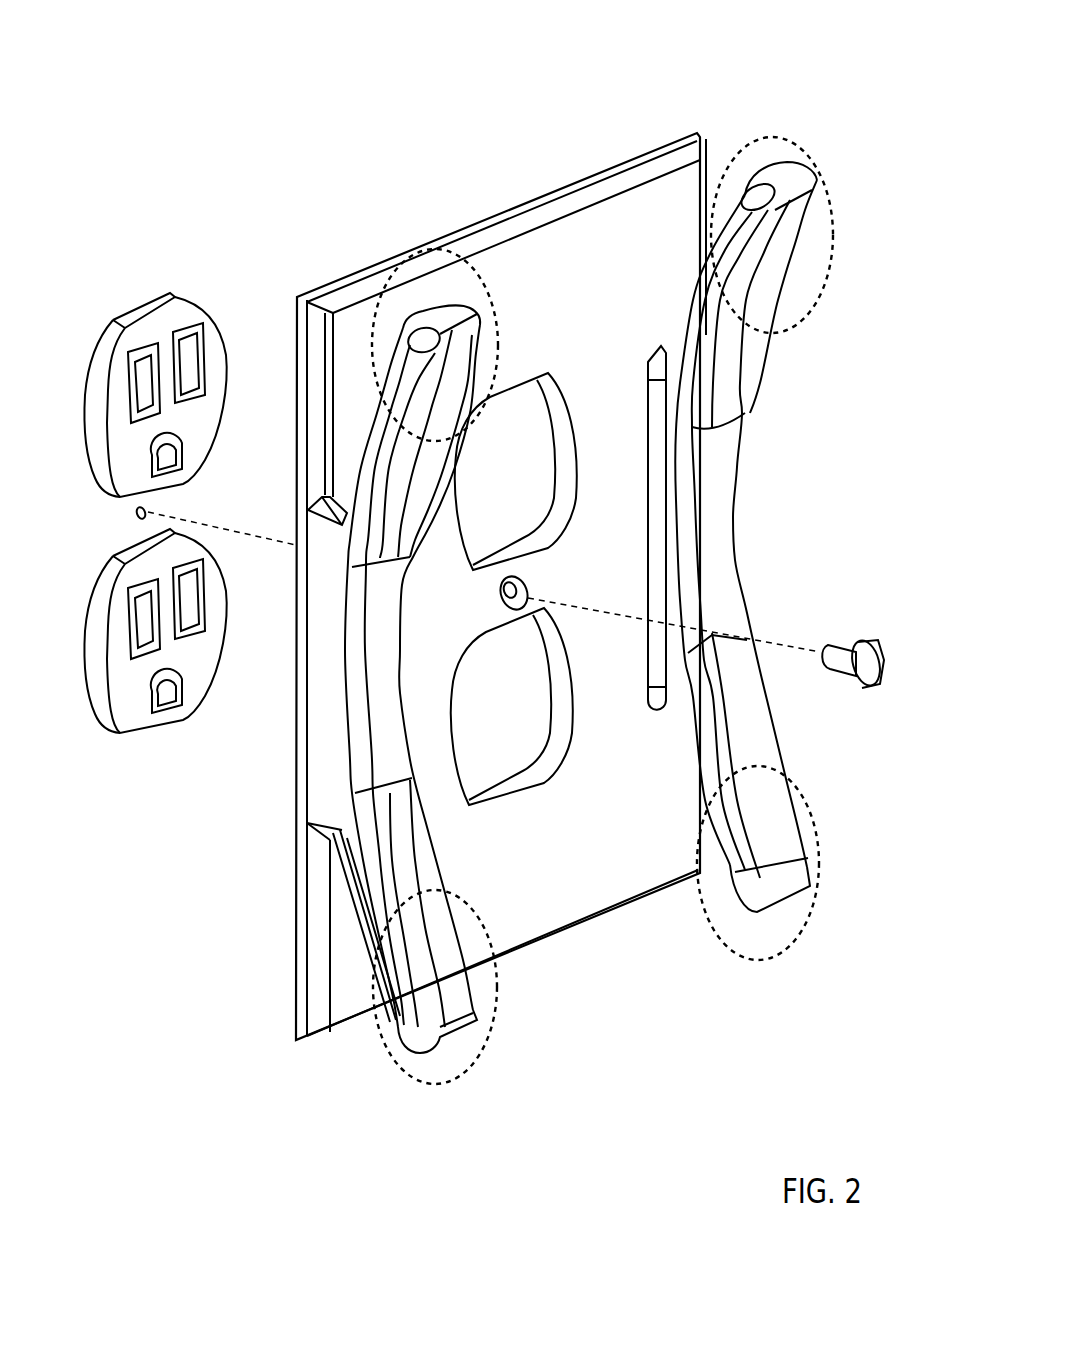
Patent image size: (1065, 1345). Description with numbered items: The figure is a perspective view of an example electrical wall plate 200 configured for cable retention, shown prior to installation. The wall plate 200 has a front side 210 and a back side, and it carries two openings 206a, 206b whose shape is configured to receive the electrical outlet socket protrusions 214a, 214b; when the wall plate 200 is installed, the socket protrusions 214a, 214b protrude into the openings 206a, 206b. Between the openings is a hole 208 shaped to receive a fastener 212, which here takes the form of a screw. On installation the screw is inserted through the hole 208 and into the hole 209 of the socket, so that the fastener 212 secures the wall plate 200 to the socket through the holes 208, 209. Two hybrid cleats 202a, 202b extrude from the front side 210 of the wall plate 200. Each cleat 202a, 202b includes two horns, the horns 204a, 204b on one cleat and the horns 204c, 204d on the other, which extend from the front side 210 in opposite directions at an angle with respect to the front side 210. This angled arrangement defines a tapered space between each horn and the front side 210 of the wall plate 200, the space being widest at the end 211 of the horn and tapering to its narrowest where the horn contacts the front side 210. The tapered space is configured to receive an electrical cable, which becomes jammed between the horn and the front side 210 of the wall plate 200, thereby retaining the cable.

The wall plate 200 is at (516, 168).
The hybrid cleat 202a is at (305, 738).
The hybrid cleat 202b is at (726, 525).
The horn 204a is at (355, 350).
The horn 204b is at (435, 1100).
The horn 204c is at (777, 122).
The horn 204d is at (757, 978).
The opening 206a is at (532, 485).
The opening 206b is at (532, 703).
The hole 208 is at (540, 579).
The hole 209 is at (189, 525).
The front side 210 is at (503, 342).
The end of the horn 211 is at (400, 1053).
The fastener 212 is at (853, 682).
The electrical outlet socket protrusion 214a is at (155, 379).
The electrical outlet socket protrusion 214b is at (155, 648).